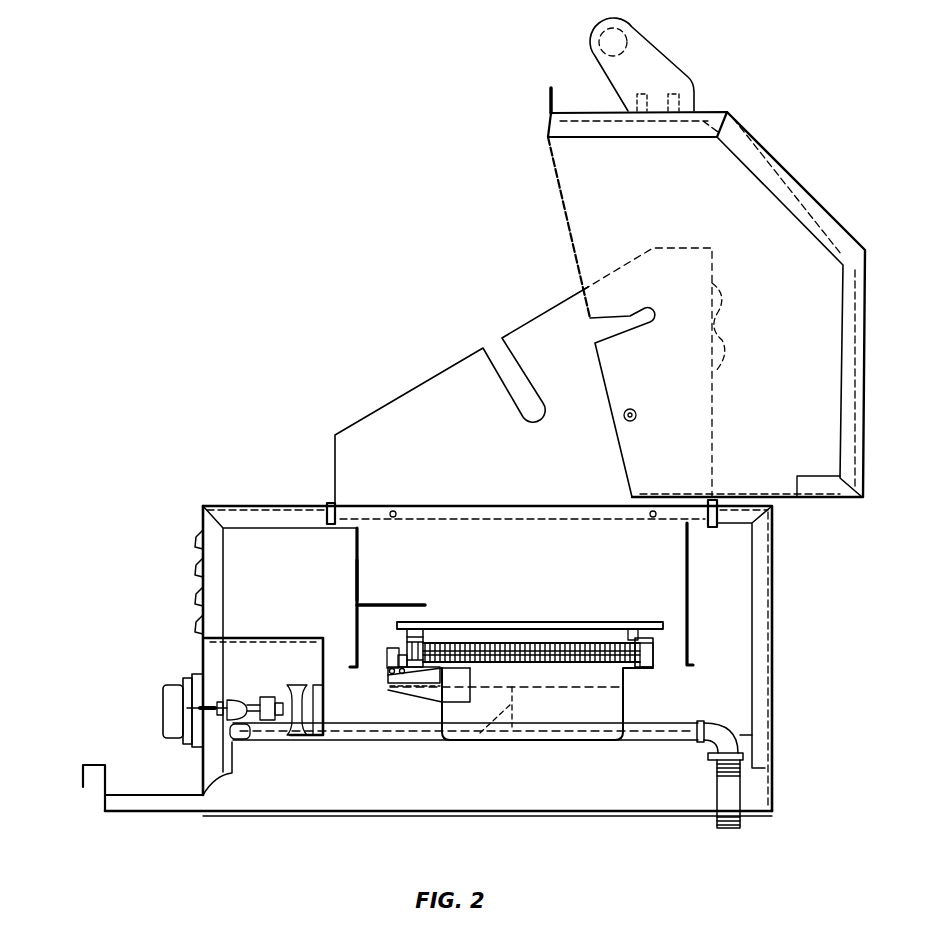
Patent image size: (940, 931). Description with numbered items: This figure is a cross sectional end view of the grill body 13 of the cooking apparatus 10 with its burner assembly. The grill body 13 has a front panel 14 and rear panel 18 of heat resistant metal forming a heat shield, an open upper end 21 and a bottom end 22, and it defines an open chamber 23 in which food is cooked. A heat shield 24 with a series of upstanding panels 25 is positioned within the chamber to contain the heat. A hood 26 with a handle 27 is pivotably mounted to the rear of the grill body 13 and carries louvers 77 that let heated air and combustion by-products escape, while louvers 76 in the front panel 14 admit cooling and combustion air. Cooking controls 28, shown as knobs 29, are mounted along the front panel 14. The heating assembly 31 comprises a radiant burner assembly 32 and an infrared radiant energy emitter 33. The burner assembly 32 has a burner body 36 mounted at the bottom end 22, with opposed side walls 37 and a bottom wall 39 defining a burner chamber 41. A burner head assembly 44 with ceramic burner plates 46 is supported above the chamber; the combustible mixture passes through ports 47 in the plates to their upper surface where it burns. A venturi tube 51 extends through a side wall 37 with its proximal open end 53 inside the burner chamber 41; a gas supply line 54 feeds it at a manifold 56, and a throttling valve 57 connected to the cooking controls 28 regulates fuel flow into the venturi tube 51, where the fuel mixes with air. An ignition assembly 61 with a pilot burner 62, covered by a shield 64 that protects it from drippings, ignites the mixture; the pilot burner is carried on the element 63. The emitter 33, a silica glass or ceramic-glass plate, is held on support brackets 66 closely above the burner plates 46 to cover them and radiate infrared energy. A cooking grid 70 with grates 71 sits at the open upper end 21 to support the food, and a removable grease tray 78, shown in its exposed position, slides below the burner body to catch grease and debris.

The cooking apparatus 10 is at (326, 316).
The grill body 13 is at (182, 511).
The front panel 14 is at (200, 650).
The rear panel 18 is at (773, 606).
The open upper end 21 is at (683, 528).
The bottom end 22 is at (257, 815).
The open chamber 23 is at (386, 551).
The heat shield 24 is at (346, 565).
The upstanding panels 25 is at (358, 584).
The hood 26 is at (777, 164).
The handle 27 is at (594, 43).
The cooking controls 28 is at (157, 707).
The knobs 29 is at (160, 727).
The heating assembly 31 is at (553, 704).
The radiant burner assembly 32 is at (395, 754).
The infrared radiant energy emitter 33 is at (590, 615).
The burner body 36 is at (630, 705).
The side walls 37 is at (440, 706).
The bottom wall 39 is at (527, 745).
The burner chamber 41 is at (590, 700).
The burner head assembly 44 is at (604, 670).
The burner plates 46 is at (640, 643).
The ports 47 is at (492, 642).
The venturi tube 51 is at (350, 733).
The proximal open end 53 is at (475, 733).
The gas supply line 54 is at (662, 742).
The manifold 56 is at (238, 735).
The throttling valve 57 is at (237, 702).
The ignition assembly 61 is at (346, 632).
The pilot burner 62 is at (423, 633).
The motor mount 63 is at (386, 663).
The shield 64 is at (418, 602).
The support brackets 66 is at (656, 654).
The cooking grid 70 is at (434, 503).
The grates 71 is at (520, 505).
The louvers 76 is at (196, 573).
The louvers 77 is at (725, 303).
The grease tray 78 is at (130, 814).